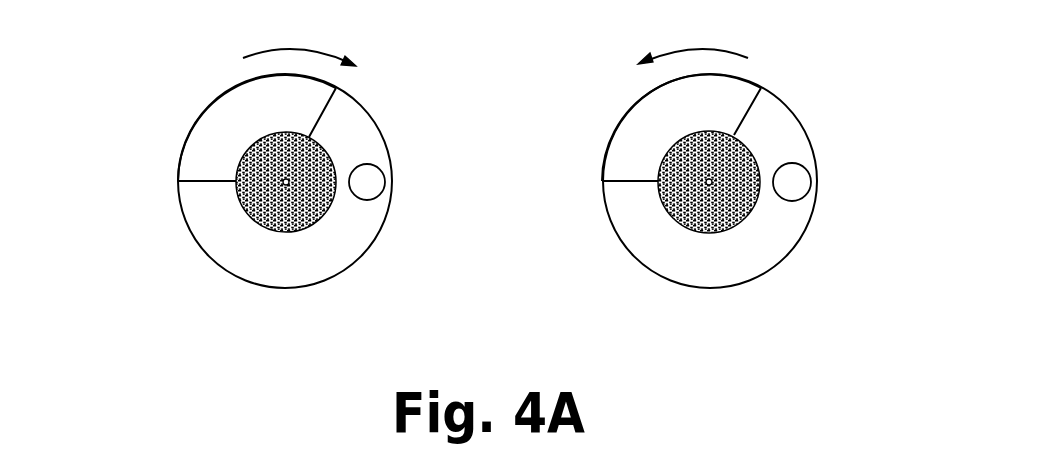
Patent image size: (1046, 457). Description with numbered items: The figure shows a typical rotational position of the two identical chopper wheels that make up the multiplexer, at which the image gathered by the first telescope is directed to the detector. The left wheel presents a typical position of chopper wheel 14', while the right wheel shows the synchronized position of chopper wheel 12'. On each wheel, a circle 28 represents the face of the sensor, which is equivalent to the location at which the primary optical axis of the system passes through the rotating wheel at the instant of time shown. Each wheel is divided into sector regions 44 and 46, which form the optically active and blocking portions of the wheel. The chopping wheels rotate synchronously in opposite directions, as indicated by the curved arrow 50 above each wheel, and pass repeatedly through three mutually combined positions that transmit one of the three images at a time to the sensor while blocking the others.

The curved arrow 50 is at (495, 233).
The first segment of rotatable member 46 is at (223, 126).
The second segment of rotatable member 44 is at (217, 241).
The chopper wheel 14' is at (228, 181).
The chopper wheel 12' is at (759, 181).
The circle representing the face of the sensor 28 is at (373, 188).